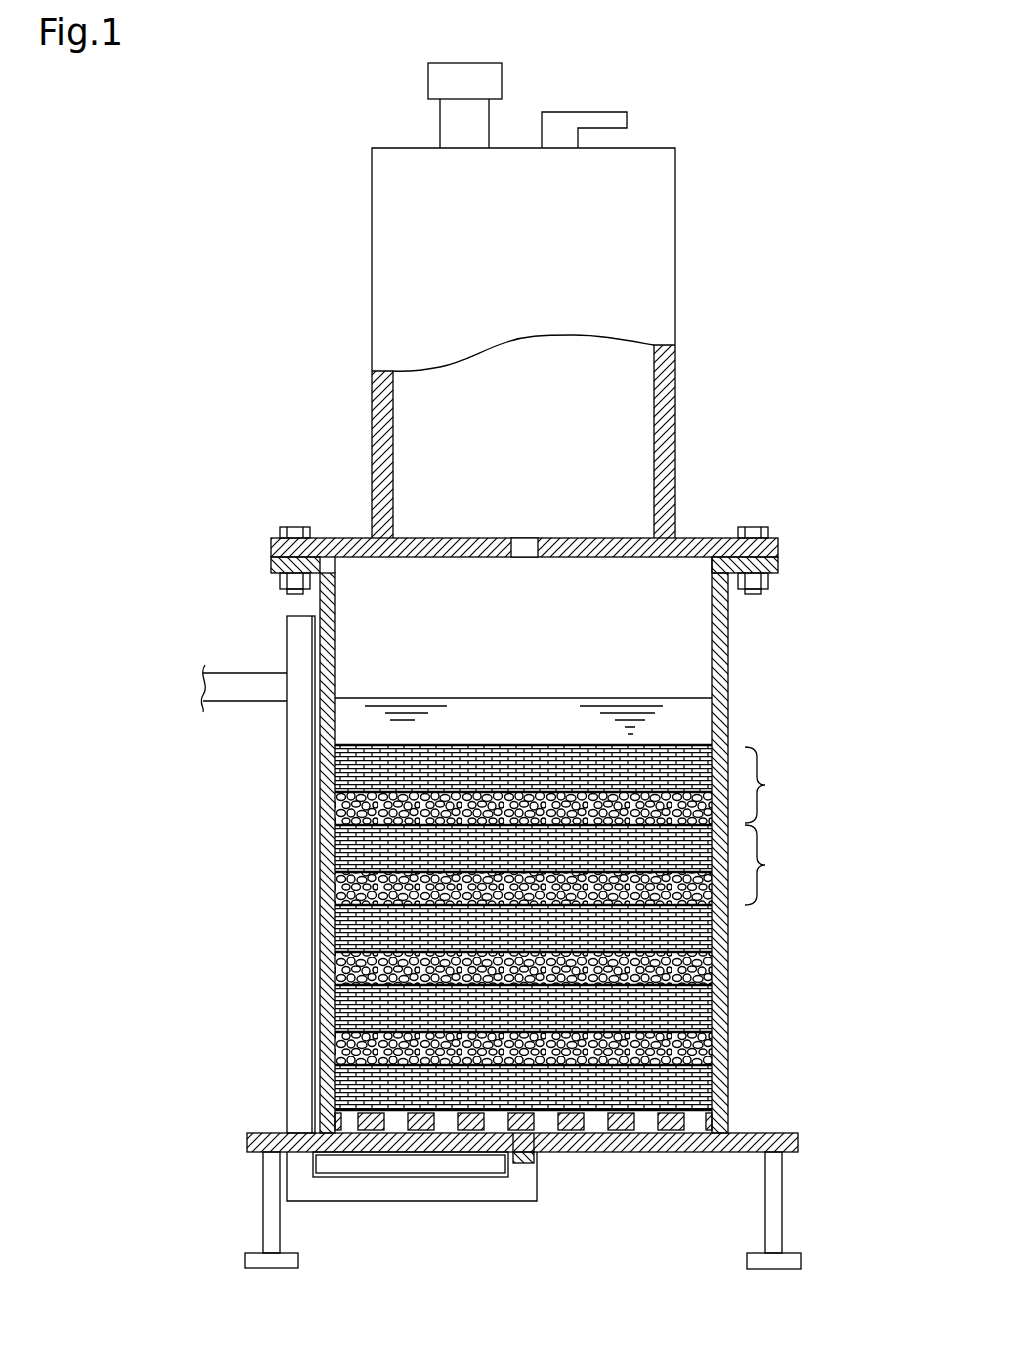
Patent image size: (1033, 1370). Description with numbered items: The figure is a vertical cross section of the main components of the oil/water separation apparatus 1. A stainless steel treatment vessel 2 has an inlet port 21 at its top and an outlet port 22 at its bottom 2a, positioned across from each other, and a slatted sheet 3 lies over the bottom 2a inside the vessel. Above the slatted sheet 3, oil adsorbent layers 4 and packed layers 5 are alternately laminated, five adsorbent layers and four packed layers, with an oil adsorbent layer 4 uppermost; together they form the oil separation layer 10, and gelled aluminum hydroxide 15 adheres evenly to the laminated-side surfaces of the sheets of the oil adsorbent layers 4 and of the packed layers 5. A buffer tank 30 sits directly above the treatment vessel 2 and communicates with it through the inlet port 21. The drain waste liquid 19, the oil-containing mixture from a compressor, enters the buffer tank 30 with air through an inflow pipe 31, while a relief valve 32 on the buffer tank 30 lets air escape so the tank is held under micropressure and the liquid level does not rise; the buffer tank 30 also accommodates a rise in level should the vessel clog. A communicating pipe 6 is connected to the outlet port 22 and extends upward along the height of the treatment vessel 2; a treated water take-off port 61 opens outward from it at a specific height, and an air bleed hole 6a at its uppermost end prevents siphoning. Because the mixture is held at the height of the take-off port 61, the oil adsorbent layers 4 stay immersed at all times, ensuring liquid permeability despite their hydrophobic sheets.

The oil/water separation apparatus 1 is at (773, 635).
The treatment vessel 2 is at (725, 1000).
The bottom 2a is at (455, 1135).
The slatted sheet 3 is at (693, 1125).
The oil adsorbent layer 4 is at (338, 848).
The packed layer 5 is at (338, 808).
The communicating pipe 6 is at (385, 1192).
The air bleed hole 6a is at (298, 627).
The treated water take-off port 61 is at (243, 683).
The oil separation layer 10 is at (774, 826).
The gelled aluminum hydroxide 15 is at (712, 752).
The drain waste liquid 19 is at (690, 707).
The inlet port 21 is at (527, 538).
The outlet port 22 is at (513, 1168).
The buffer tank 30 is at (668, 391).
The inflow pipe 31 is at (597, 118).
The relief valve 32 is at (438, 82).